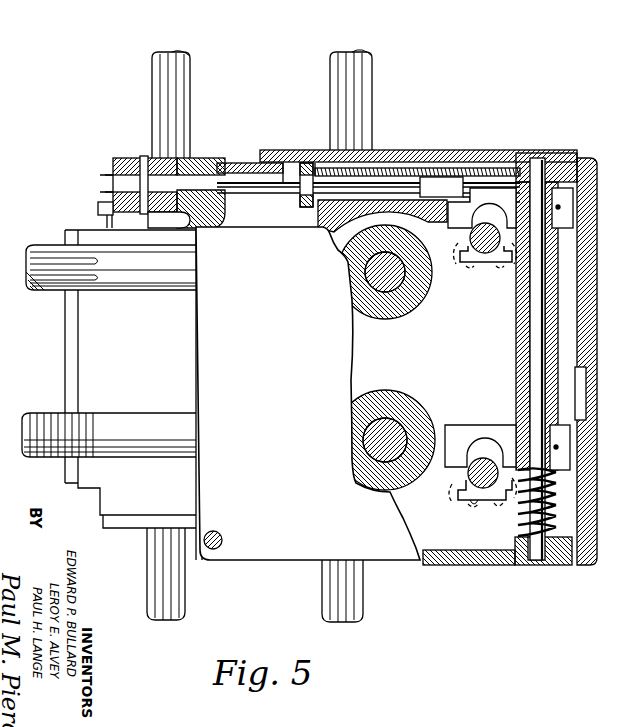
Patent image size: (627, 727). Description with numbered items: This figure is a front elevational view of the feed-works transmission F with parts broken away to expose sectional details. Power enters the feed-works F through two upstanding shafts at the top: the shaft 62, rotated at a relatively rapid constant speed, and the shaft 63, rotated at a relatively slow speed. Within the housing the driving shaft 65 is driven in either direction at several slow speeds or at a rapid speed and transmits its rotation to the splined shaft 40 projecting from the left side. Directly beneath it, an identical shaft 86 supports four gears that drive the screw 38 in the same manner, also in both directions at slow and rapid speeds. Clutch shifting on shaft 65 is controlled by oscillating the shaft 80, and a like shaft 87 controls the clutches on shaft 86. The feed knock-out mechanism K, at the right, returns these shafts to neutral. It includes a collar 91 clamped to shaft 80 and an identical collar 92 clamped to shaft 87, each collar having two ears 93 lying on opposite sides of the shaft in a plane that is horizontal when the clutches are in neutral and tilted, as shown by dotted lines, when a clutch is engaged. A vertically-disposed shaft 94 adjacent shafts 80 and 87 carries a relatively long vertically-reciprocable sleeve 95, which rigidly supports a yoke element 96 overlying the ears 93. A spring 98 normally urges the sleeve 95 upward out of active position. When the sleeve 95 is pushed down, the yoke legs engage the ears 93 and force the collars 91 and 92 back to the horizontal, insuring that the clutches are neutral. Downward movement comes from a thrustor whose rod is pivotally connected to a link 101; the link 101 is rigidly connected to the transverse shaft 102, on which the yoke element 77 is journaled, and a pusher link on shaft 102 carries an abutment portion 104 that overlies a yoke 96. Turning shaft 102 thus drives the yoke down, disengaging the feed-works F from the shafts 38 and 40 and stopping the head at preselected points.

The shaft 63 is at (157, 92).
The shaft 62 is at (335, 92).
The yoke element 77 is at (397, 172).
The shaft 102 is at (243, 180).
The link 101 is at (138, 158).
The splined shaft 40 is at (40, 245).
The screw 38 is at (36, 404).
The driving shaft 65 is at (356, 282).
The shaft 86 is at (362, 446).
The feed-works transmission F is at (293, 524).
The abutment portion 104 is at (433, 186).
The yoke element 96 is at (478, 188).
The feed knock-out mechanism K is at (496, 179).
The shaft 94 is at (547, 293).
The sleeve 95 is at (598, 326).
The collar 91 is at (497, 262).
The shaft 80 is at (463, 252).
The shaft 87 is at (468, 486).
The ears 93 is at (481, 264).
The collar 92 is at (473, 508).
The spring 98 is at (547, 513).